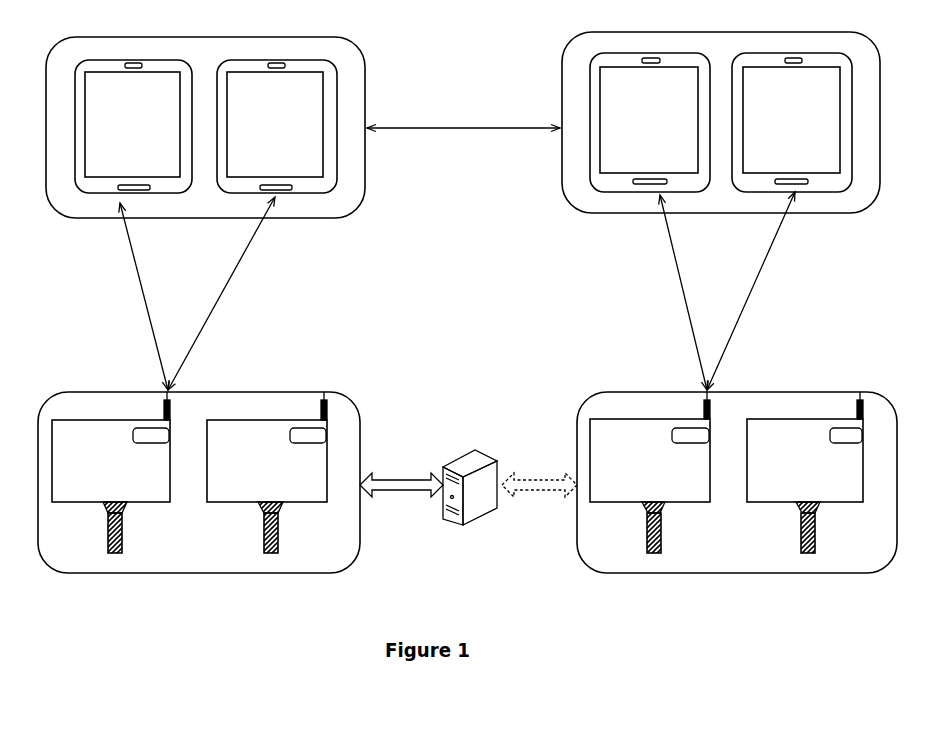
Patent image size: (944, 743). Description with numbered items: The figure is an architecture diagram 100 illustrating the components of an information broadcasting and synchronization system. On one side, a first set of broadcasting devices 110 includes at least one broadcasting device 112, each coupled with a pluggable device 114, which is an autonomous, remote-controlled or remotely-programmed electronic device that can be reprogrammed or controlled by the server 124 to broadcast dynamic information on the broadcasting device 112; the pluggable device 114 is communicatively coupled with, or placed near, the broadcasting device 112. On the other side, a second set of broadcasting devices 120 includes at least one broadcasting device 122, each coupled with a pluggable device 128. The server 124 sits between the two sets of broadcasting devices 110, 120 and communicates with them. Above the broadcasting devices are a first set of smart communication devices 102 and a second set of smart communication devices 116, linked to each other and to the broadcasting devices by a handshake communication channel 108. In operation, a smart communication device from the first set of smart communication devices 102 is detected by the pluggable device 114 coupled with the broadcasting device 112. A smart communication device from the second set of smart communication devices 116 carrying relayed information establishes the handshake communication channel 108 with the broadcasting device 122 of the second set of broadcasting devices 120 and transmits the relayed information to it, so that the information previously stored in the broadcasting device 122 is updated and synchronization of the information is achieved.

The architecture diagram 100 is at (140, 646).
The first set of smart communication devices 102 is at (367, 48).
The handshake communication channel 108 is at (407, 123).
The first set of broadcasting devices 110 is at (199, 451).
The broadcasting device 112 is at (111, 451).
The pluggable device 114 is at (157, 443).
The second set of smart communication devices 116 is at (740, 28).
The second set of broadcasting devices 120 is at (720, 451).
The broadcasting device 122 is at (626, 443).
The server 124 is at (473, 445).
The pluggable device 128 is at (693, 443).